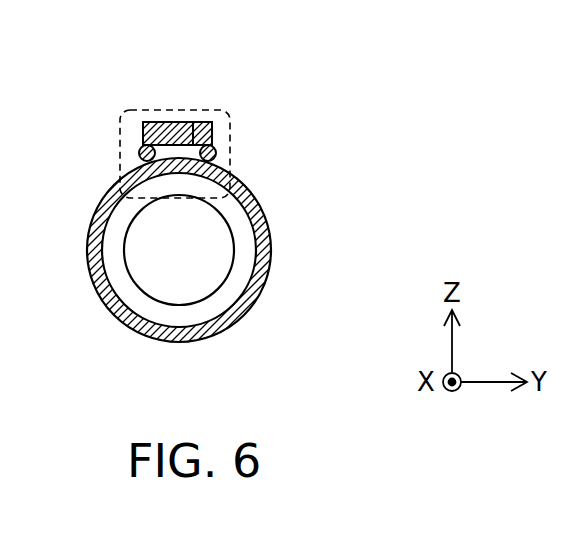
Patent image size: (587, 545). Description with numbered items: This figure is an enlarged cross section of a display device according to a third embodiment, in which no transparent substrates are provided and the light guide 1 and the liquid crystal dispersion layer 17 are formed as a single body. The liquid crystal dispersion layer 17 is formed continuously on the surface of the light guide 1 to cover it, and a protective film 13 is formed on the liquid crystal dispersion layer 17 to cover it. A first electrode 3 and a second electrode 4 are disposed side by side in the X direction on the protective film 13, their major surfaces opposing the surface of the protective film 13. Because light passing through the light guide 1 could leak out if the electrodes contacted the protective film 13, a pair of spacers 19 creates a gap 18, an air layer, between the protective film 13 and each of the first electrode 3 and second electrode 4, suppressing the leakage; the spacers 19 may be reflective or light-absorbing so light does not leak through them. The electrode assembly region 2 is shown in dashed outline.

The light guide 1 is at (178, 268).
The holder unit 2 is at (130, 112).
The first electrode 3 is at (173, 120).
The second electrode 4 is at (193, 122).
The protective film 13 is at (268, 247).
The liquid crystal dispersion layer 17 is at (228, 290).
The gap 18 is at (187, 151).
The spacer 19 is at (138, 155).